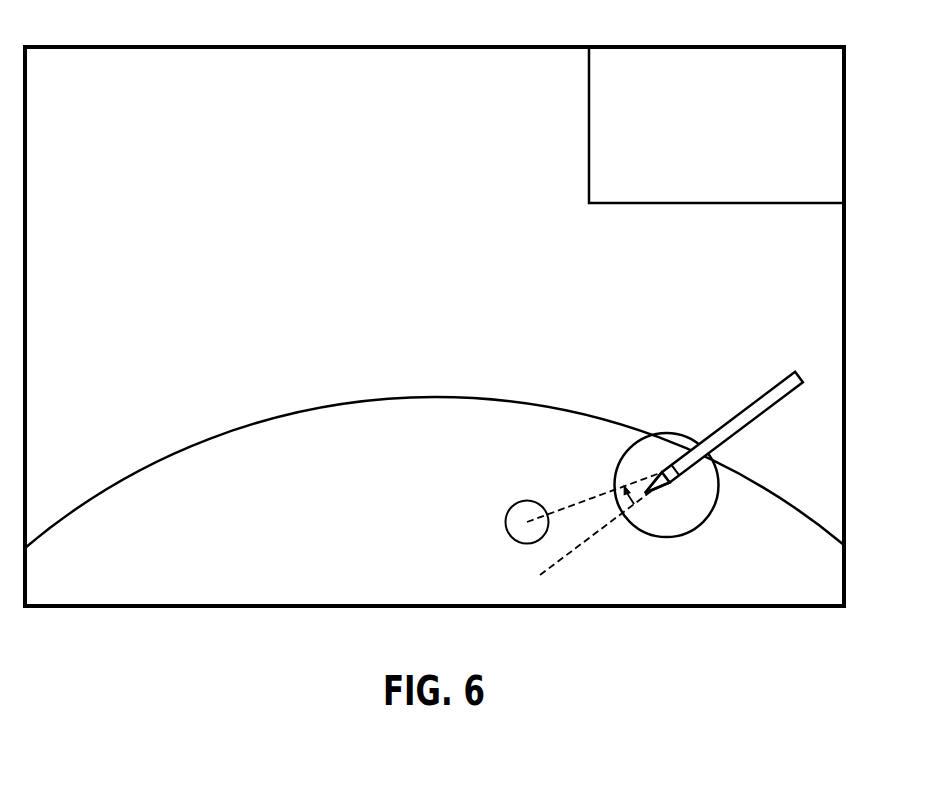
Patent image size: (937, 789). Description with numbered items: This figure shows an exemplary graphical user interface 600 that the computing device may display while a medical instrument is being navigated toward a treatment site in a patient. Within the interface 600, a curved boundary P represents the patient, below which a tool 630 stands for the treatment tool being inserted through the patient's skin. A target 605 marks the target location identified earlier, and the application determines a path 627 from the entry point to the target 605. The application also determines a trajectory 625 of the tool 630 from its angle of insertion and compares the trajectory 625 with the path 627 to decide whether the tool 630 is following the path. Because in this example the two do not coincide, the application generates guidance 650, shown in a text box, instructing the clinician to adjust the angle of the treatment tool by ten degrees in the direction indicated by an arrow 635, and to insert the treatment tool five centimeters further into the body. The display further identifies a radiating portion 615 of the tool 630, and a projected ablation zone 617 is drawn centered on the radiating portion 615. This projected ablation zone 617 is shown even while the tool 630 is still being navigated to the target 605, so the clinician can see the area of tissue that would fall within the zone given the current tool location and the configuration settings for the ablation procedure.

The display screen / user interface 600 is at (218, 46).
The guidance 650 is at (588, 137).
The patient surface P is at (463, 397).
The target 605 is at (515, 504).
The path 627 is at (598, 488).
The trajectory 625 is at (562, 558).
The arrow 635 is at (615, 488).
The projected ablation zone 617 is at (703, 522).
The tool 630 is at (753, 403).
The radiating portion 615 is at (662, 470).